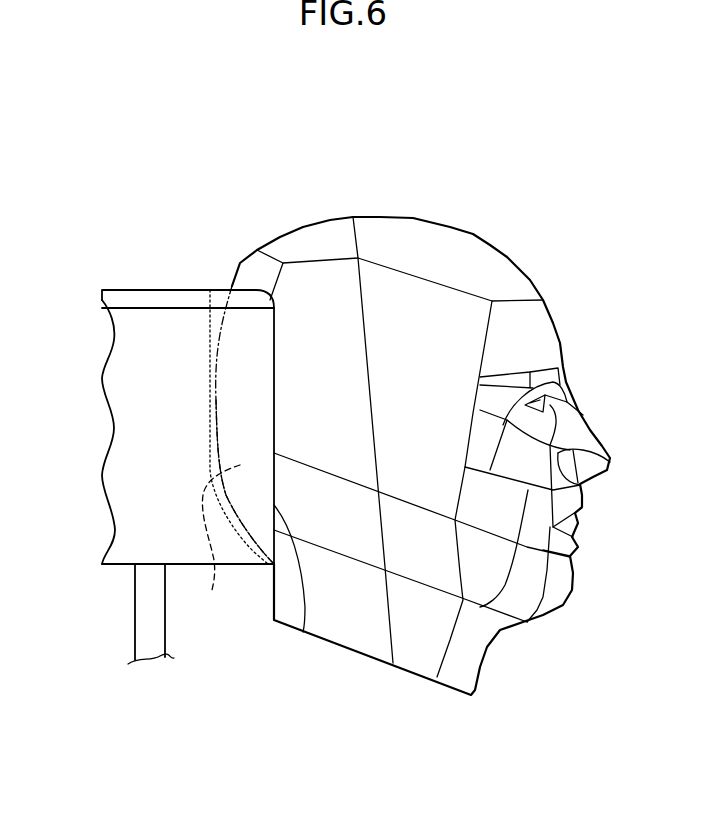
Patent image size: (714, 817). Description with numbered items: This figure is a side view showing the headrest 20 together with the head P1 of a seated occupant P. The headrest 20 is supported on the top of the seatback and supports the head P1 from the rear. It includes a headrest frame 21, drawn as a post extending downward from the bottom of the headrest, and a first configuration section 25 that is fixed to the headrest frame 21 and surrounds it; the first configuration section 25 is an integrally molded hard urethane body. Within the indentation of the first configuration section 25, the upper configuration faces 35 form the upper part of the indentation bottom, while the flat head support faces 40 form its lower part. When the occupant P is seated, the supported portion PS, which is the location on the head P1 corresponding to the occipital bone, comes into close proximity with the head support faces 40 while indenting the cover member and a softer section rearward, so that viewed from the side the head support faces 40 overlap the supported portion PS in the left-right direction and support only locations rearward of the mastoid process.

The headrest 20 is at (112, 272).
The headrest frame 21 is at (147, 620).
The first configuration section 25 is at (127, 370).
The upper configuration face 35 is at (212, 360).
The head support face 40 is at (240, 507).
The supported portion PS is at (216, 542).
The seated occupant P is at (560, 263).
The head P1 is at (468, 253).